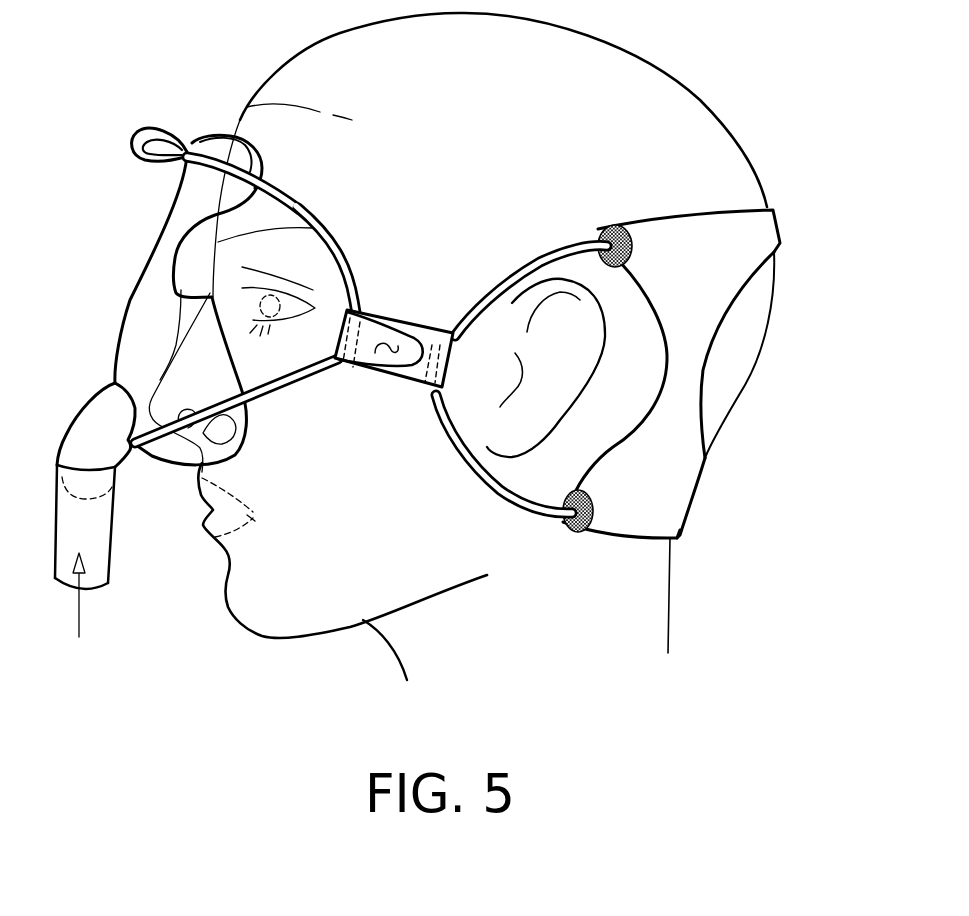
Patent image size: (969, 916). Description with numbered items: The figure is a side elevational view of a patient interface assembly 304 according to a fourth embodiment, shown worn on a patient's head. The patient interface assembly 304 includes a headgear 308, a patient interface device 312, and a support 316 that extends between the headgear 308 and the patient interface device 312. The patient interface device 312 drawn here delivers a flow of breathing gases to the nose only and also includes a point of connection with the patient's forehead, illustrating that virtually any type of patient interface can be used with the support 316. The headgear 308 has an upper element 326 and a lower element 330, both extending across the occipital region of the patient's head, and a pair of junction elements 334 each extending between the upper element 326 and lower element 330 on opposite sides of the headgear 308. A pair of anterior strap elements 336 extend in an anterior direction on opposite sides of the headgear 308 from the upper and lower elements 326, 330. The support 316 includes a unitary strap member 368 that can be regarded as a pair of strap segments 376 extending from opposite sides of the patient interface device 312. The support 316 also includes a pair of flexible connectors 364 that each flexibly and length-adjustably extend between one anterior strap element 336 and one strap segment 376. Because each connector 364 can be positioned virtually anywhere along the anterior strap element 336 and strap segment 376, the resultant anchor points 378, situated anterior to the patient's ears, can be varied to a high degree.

The patient interface assembly 304 is at (444, 128).
The headgear 308 is at (705, 368).
The patient interface device 312 is at (226, 127).
The support 316 is at (320, 389).
The upper element 326 is at (742, 210).
The lower element 330 is at (677, 482).
The junction element 334 is at (707, 381).
The anterior strap element 336 is at (524, 256).
The flexible connector 364 is at (394, 393).
The unitary strap member 368 is at (307, 217).
The strap segment 376 is at (343, 250).
The anchor point 378 is at (388, 344).